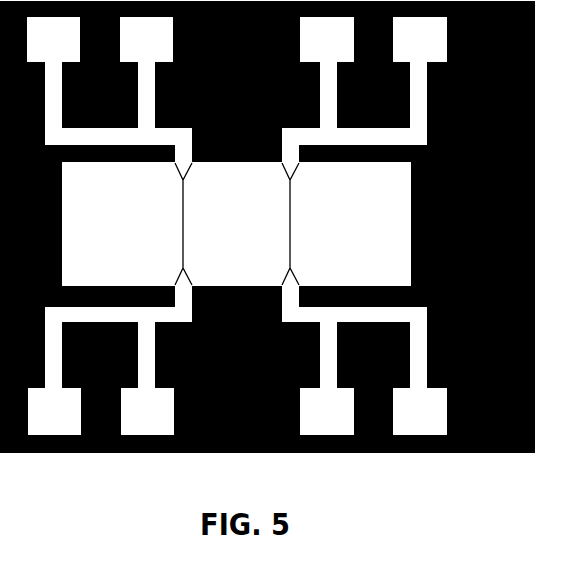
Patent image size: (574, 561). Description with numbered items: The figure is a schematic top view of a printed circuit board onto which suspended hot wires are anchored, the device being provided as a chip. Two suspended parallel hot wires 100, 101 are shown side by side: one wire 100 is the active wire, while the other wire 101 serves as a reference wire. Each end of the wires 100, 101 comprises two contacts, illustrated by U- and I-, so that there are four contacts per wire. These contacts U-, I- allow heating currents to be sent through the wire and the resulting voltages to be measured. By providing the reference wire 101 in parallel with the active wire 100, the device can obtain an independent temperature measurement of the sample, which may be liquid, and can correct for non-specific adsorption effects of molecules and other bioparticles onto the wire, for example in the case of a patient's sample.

The active wire 100 is at (183, 225).
The reference wire 101 is at (290, 225).
The voltage contact U- is at (237, 39).
The current contact I- is at (237, 39).